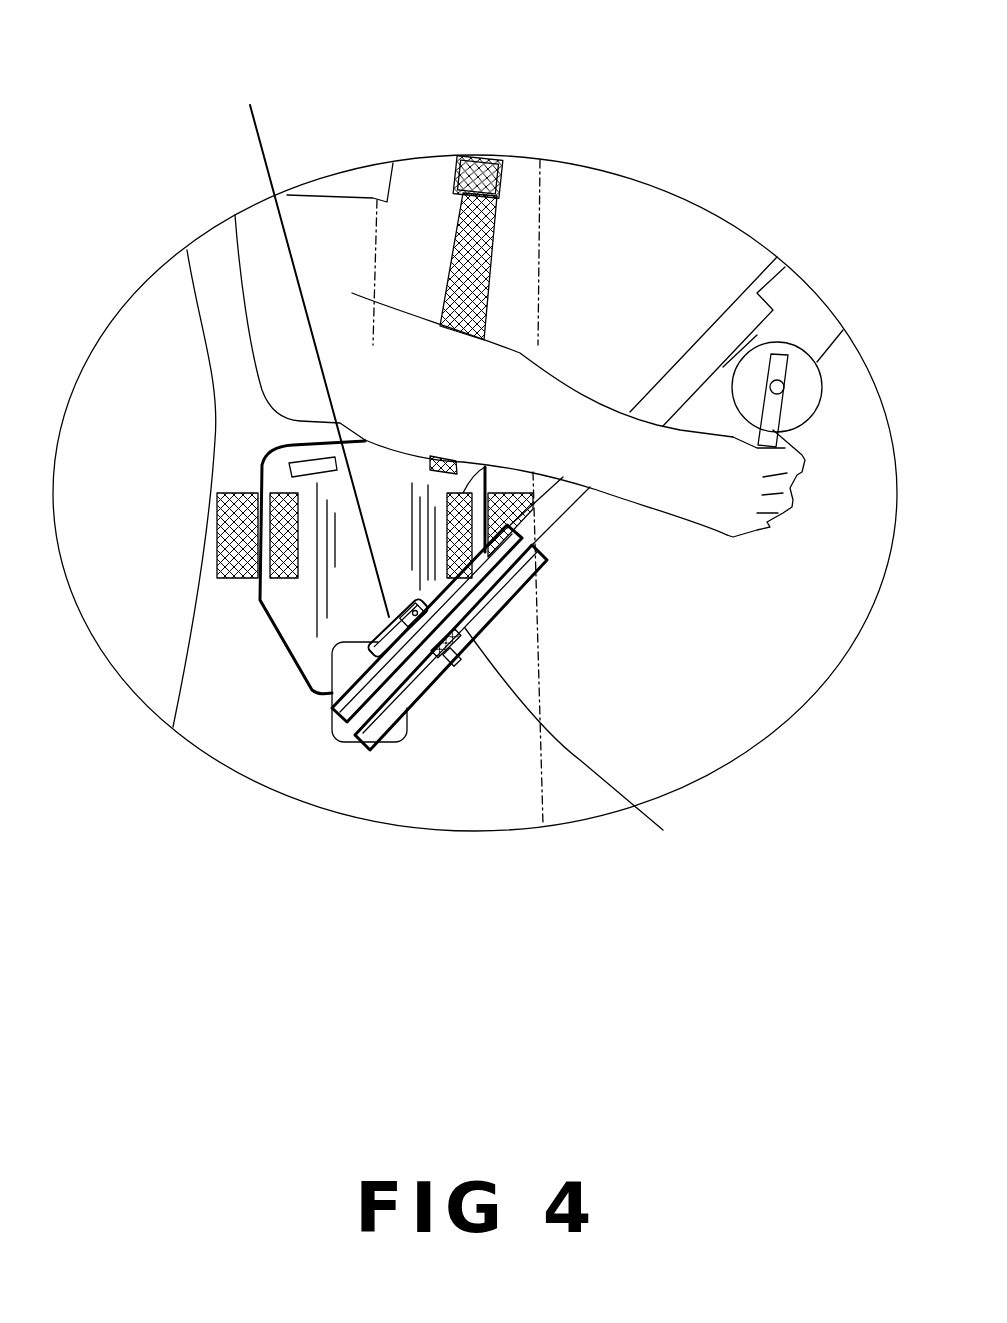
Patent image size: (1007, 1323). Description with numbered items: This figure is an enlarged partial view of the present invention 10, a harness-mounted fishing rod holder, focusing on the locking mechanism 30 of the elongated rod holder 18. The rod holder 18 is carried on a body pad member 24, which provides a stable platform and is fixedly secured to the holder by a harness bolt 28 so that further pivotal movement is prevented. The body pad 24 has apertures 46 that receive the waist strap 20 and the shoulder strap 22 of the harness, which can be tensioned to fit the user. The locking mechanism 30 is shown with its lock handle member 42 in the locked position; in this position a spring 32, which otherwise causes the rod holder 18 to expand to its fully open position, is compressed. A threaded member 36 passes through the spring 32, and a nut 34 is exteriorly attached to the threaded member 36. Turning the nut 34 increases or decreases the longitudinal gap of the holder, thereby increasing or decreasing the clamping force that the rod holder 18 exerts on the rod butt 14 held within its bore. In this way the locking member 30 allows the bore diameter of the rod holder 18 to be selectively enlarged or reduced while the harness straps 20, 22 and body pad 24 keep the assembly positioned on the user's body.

The present invention 10 is at (291, 786).
The rod butt 14 is at (562, 532).
The fishing rod holder member 18 is at (498, 658).
The waist strap 20 is at (232, 548).
The shoulder strap 22 is at (473, 263).
The body pad member 24 is at (277, 617).
The harness bolt 28 is at (372, 700).
The locking member 30 is at (305, 335).
The spring 32 is at (413, 710).
The nut 34 is at (460, 655).
The threaded member 36 is at (448, 665).
The lock handle member 42 is at (370, 643).
The apertures 46 is at (293, 493).